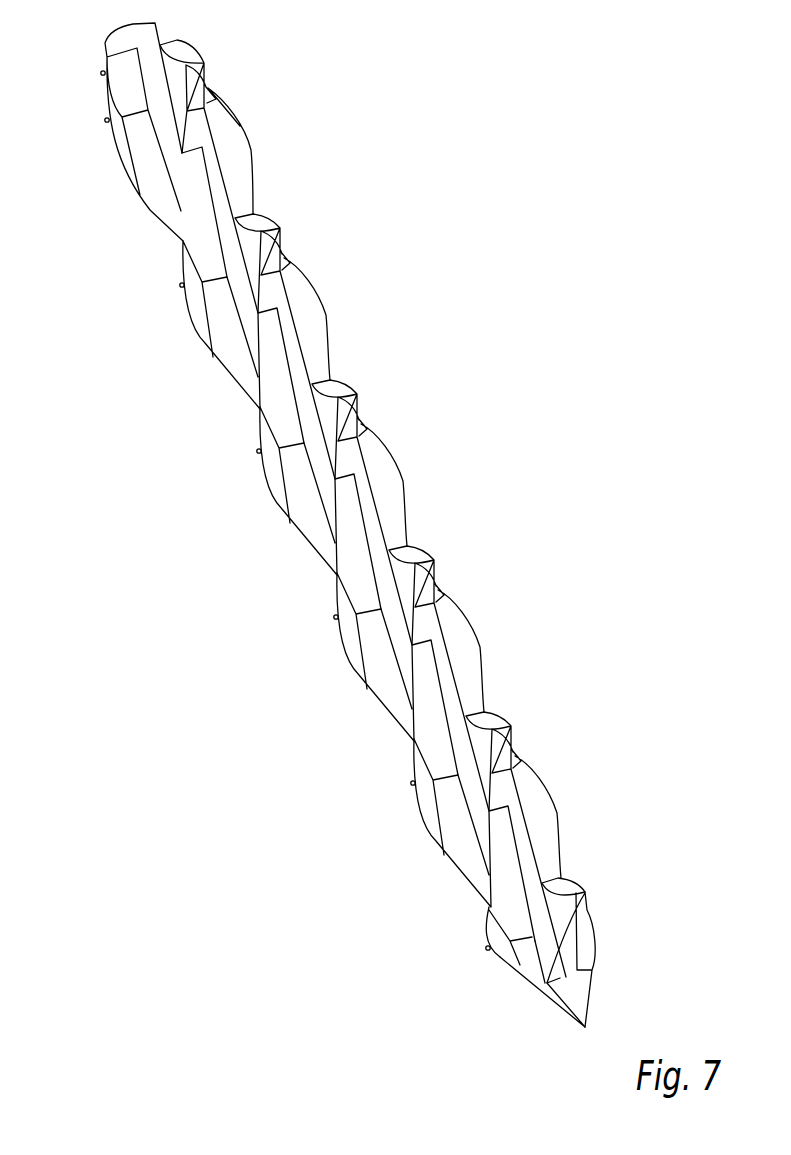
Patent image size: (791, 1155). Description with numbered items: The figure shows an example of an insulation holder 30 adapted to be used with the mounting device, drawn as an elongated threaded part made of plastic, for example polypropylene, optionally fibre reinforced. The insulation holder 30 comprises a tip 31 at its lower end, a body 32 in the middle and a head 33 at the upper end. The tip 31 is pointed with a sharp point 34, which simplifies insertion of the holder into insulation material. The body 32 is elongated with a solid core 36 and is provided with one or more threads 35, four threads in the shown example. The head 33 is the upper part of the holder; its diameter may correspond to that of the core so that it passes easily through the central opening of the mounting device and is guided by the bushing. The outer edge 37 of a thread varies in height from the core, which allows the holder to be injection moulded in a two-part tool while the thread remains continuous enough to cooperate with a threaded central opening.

The insulation holder 30 is at (369, 141).
The tip 31 is at (615, 922).
The body 32 is at (461, 437).
The head 33 is at (237, 35).
The sharp point 34 is at (599, 1023).
The threads 35 is at (457, 640).
The solid core 36 is at (300, 383).
The outer edge 37 is at (547, 765).